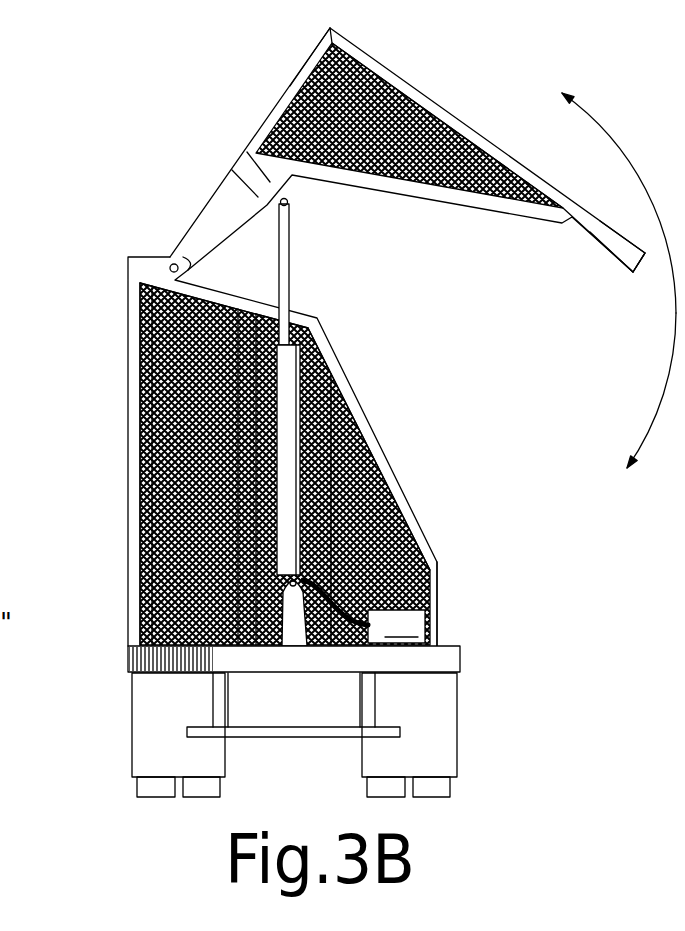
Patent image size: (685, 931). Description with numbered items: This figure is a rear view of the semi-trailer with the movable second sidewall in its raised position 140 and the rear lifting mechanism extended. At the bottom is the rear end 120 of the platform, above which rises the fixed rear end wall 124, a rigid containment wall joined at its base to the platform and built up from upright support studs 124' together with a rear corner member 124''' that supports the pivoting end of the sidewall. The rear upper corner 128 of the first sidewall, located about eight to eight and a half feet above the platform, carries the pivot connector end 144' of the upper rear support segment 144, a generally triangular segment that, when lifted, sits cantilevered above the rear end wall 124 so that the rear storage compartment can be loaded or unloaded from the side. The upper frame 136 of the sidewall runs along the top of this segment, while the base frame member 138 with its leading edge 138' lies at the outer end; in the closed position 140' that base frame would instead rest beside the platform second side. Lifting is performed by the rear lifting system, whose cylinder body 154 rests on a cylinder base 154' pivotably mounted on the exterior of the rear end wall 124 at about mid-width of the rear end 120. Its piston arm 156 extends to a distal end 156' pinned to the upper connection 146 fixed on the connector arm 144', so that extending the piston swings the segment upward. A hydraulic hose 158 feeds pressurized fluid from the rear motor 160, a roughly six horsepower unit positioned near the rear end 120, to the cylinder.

The rear end 120 is at (445, 658).
The rear end wall 124 is at (251, 464).
The rear end wall support stud 124' is at (385, 449).
The rear corner member 124''' is at (94, 464).
The rear upper corner 128 is at (150, 268).
The upper frame 136 is at (322, 33).
The base frame member 138 is at (617, 224).
The leading edge 138' is at (628, 294).
The raised position 140 is at (623, 194).
The closed position 140' is at (629, 390).
The upper rear support segment 144 is at (409, 125).
The pivot connector end 144' is at (230, 142).
The upper connection 146 is at (243, 171).
The cylinder body 154 is at (355, 460).
The cylinder base 154' is at (280, 651).
The piston arm 156 is at (326, 274).
The distal end 156' is at (331, 211).
The hydraulic hose 158 is at (320, 643).
The rear motor 160 is at (396, 626).